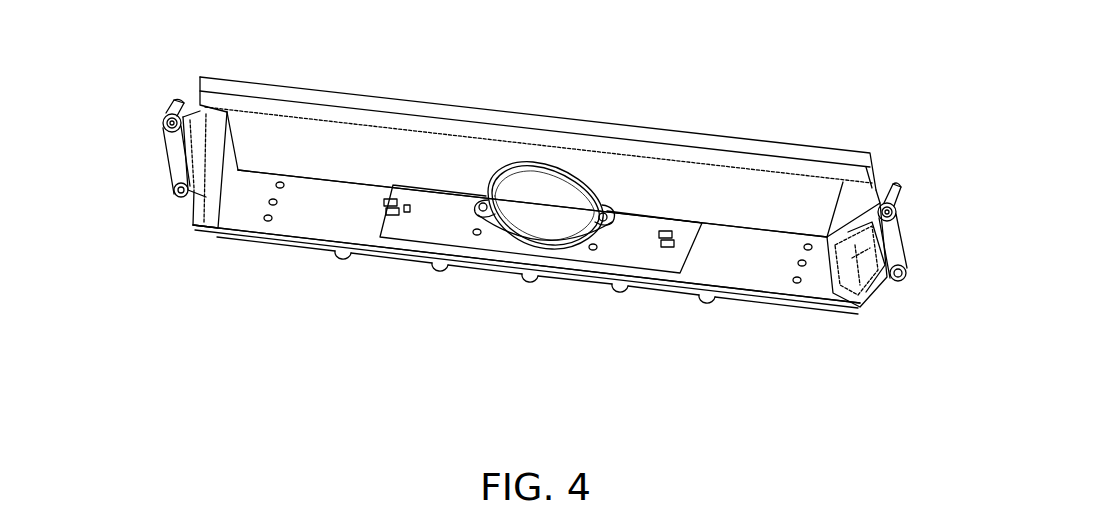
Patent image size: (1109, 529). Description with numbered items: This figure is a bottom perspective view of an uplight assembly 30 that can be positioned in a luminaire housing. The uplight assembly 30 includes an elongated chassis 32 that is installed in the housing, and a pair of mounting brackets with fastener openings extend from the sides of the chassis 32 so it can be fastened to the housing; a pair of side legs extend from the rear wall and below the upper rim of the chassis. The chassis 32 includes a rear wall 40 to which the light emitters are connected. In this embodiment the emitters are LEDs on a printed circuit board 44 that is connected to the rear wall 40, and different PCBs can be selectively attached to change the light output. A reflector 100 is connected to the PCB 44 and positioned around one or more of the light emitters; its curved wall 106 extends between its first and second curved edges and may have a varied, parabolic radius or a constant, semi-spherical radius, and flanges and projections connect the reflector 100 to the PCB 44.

The uplight assembly 30 is at (873, 107).
The chassis 32 is at (283, 245).
The rear wall 40 is at (792, 290).
The printed circuit board 44 is at (615, 245).
The reflector 100 is at (533, 247).
The curved wall 106 is at (518, 225).